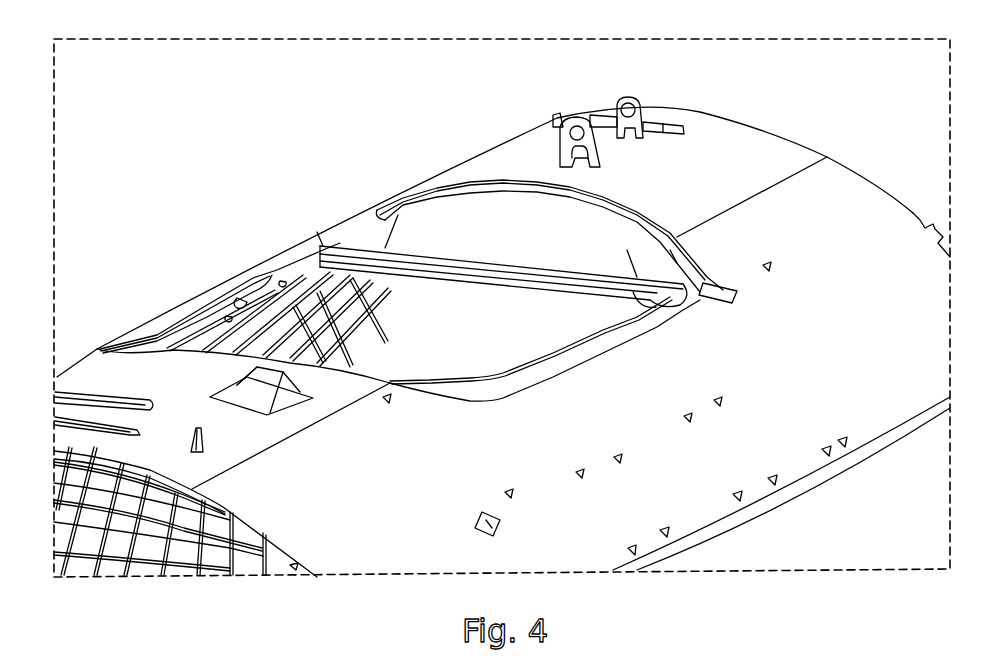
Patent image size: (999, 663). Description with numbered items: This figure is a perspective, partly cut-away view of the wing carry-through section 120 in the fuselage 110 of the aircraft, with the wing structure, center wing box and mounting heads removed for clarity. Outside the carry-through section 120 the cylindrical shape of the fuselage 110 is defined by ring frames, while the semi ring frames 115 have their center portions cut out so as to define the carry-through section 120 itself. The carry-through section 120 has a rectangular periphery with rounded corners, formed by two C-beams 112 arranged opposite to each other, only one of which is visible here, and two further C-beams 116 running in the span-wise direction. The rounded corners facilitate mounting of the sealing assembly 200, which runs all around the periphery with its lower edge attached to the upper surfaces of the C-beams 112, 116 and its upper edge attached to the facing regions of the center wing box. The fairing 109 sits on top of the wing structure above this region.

The fuselage 110 is at (924, 268).
The C-beam 112 is at (180, 340).
The semi ring frame 115 is at (210, 562).
The C-beam 116 is at (645, 297).
The fairing 109 is at (703, 253).
The wing carry-through section 120 is at (398, 348).
The sealing assembly 200 is at (490, 396).